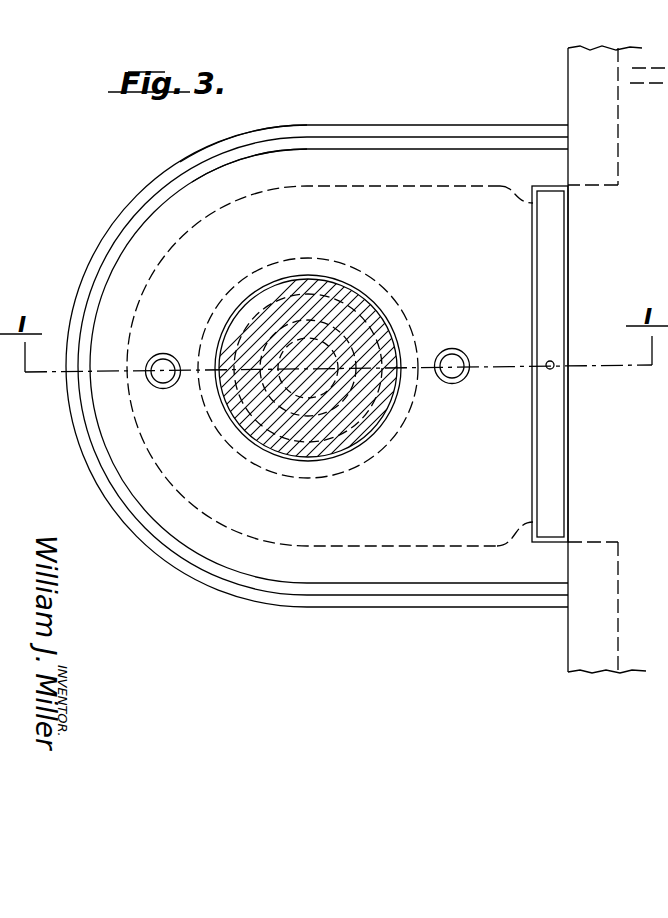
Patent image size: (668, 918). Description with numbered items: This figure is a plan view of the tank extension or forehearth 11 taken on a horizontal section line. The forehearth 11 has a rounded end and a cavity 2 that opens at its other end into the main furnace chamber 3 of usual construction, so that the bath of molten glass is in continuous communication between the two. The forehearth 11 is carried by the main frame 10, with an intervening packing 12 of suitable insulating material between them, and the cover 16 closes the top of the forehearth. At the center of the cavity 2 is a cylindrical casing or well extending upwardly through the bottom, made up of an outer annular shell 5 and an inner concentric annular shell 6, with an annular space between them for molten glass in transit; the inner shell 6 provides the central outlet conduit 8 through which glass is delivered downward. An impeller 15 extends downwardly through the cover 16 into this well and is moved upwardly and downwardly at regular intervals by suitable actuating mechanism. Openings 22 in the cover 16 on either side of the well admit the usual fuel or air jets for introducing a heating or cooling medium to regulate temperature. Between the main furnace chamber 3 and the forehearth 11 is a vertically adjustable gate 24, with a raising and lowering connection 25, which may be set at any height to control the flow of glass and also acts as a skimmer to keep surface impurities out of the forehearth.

The cavity 2 is at (330, 366).
The main furnace chamber 3 is at (618, 359).
The outer annular shell 5 is at (378, 445).
The inner concentric annular shell 6 is at (287, 405).
The central outlet conduit 8 is at (308, 368).
The main frame 10 is at (142, 202).
The forehearth 11 is at (275, 174).
The packing 12 is at (192, 177).
The impeller 15 is at (347, 292).
The cover 16 is at (115, 270).
The openings 22 is at (163, 362).
The vertically adjustable gate 24 is at (548, 452).
The raising and lowering connection 25 is at (555, 361).